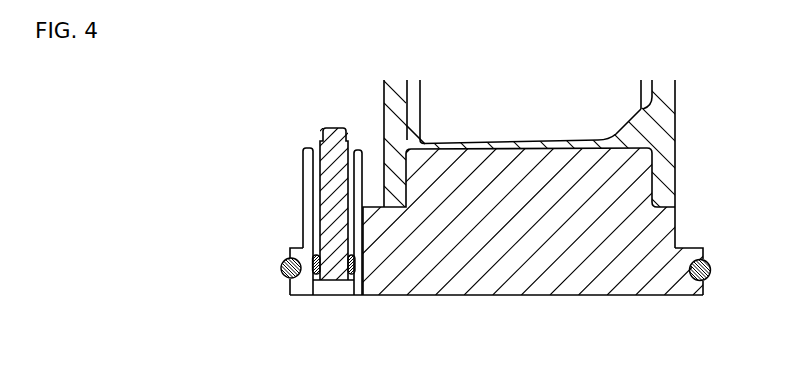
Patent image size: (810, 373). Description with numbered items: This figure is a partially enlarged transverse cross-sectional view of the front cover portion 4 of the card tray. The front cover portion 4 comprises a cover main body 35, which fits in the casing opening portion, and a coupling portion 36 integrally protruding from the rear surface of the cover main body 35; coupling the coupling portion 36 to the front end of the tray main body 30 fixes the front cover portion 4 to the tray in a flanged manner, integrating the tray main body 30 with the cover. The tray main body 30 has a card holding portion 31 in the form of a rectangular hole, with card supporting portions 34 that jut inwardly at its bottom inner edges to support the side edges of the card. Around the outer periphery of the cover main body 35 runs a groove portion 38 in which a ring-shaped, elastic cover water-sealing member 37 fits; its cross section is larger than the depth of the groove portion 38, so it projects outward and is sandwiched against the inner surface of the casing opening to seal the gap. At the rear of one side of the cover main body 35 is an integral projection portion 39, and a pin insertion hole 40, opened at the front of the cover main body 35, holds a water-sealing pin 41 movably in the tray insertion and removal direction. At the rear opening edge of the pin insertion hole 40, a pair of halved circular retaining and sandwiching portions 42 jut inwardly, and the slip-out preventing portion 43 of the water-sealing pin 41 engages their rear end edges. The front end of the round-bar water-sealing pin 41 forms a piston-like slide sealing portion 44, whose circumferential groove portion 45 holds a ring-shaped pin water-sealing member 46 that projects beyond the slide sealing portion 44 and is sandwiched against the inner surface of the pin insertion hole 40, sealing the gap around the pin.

The front cover portion 4 is at (670, 232).
The tray main body 30 is at (675, 108).
The card holding portion 31 is at (543, 134).
The card supporting portions 34 is at (420, 92).
The cover main body 35 is at (650, 297).
The coupling portion 36 is at (633, 186).
The cover water-sealing member 37 is at (281, 272).
The groove portion 38 is at (297, 297).
The projection portion 39 is at (302, 197).
The pin insertion hole 40 is at (302, 243).
The water-sealing pin 41 is at (313, 213).
The retaining and sandwiching portions 42 is at (313, 146).
The slip-out preventing portion 43 is at (340, 128).
The slide sealing portion 44 is at (332, 288).
The groove portion 45 is at (355, 298).
The pin water-sealing member 46 is at (354, 266).